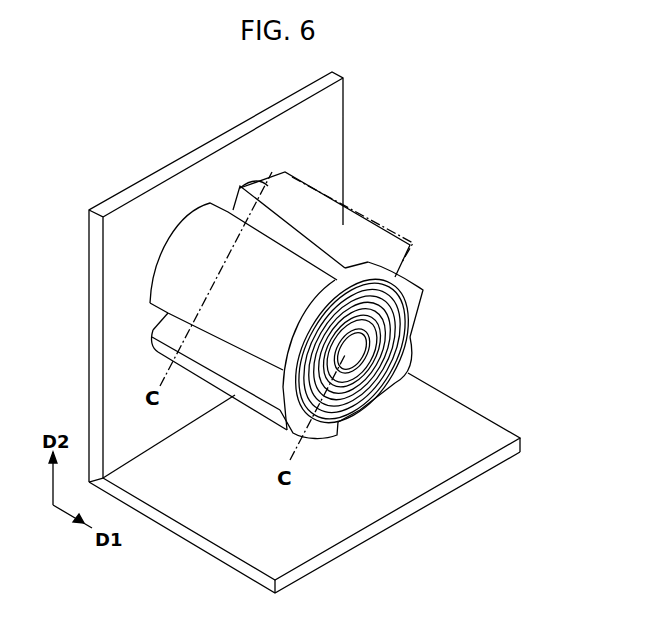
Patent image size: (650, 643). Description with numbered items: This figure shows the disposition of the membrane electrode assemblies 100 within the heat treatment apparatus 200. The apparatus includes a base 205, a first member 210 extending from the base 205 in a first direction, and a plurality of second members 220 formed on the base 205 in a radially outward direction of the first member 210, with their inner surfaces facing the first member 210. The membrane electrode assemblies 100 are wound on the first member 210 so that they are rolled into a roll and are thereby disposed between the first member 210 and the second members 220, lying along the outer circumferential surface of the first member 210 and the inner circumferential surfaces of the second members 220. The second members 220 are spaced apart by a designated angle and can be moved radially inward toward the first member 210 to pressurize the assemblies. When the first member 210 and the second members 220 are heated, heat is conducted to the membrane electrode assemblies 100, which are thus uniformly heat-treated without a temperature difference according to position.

The heat treatment apparatus 200 is at (152, 133).
The base 205 is at (320, 175).
The membrane electrode assemblies 100 is at (400, 310).
The second members 220 is at (397, 273).
The first member 210 is at (355, 352).